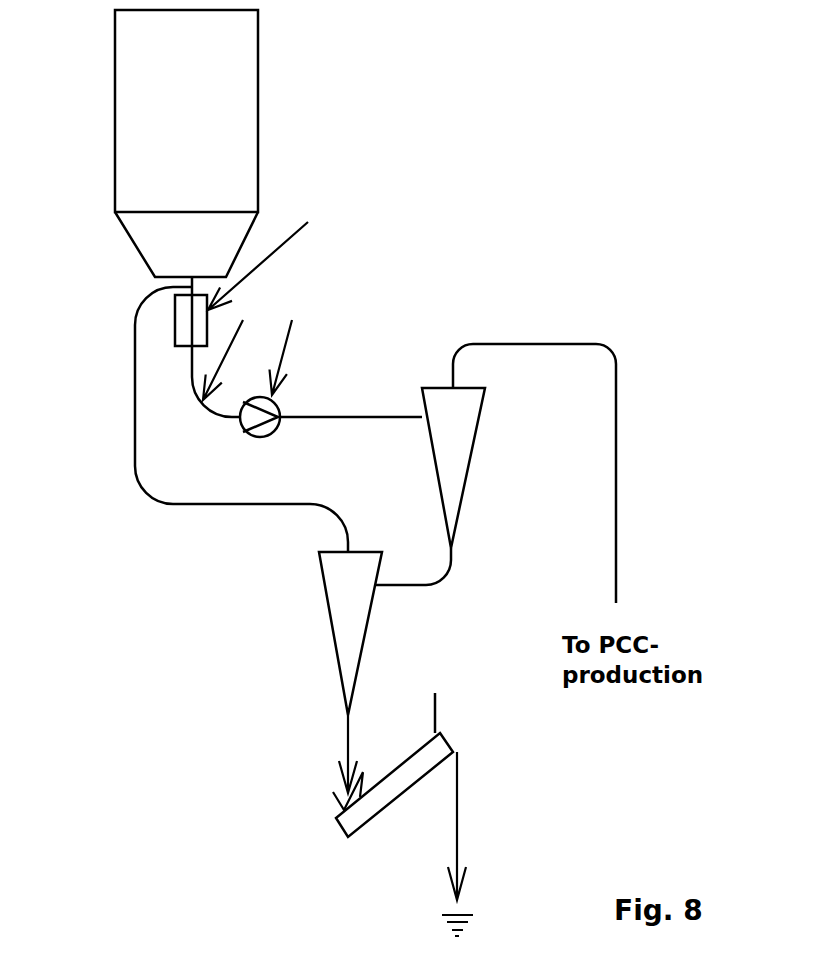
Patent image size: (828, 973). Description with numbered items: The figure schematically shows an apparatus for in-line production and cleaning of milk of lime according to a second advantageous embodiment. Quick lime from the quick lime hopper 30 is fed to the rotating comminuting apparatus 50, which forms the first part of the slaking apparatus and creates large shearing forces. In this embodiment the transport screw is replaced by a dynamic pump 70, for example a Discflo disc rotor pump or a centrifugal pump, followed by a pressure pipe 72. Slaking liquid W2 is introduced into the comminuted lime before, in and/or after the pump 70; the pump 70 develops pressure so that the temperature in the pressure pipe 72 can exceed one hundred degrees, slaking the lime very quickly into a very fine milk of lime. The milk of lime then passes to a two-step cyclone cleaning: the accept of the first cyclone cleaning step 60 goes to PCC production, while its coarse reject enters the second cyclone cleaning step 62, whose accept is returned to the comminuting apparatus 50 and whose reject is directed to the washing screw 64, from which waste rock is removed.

The quick lime hopper 30 is at (172, 156).
The comminuting apparatus 50 is at (188, 320).
The liquid W2 is at (280, 357).
The dynamic pump 70 is at (282, 407).
The pressure pipe 72 is at (367, 414).
The first cyclone cleaning step 60 is at (458, 423).
The second cyclone cleaning step 62 is at (348, 602).
The washing screw 64 is at (408, 768).